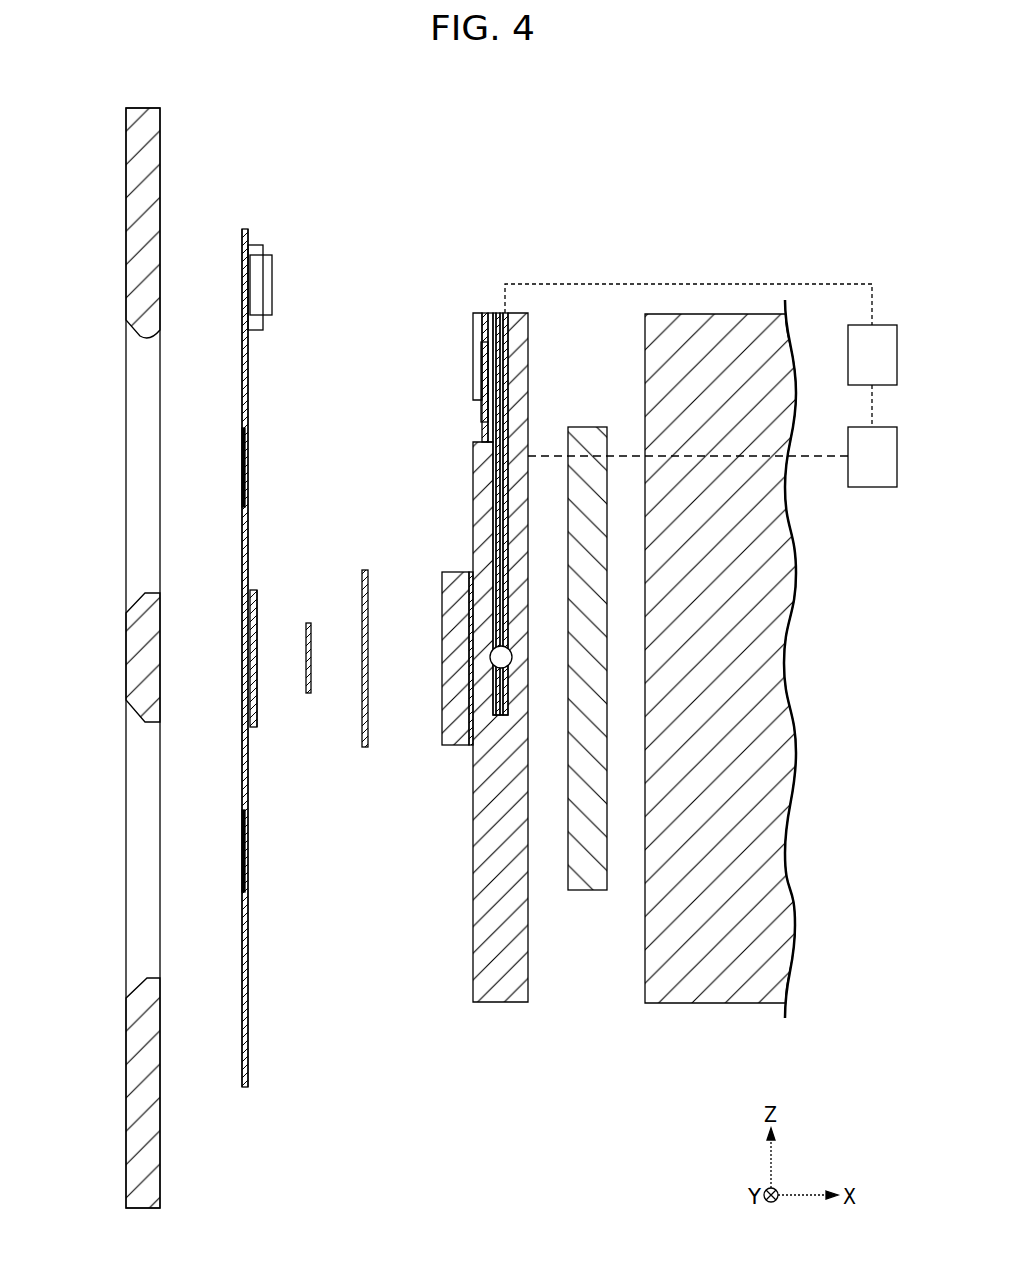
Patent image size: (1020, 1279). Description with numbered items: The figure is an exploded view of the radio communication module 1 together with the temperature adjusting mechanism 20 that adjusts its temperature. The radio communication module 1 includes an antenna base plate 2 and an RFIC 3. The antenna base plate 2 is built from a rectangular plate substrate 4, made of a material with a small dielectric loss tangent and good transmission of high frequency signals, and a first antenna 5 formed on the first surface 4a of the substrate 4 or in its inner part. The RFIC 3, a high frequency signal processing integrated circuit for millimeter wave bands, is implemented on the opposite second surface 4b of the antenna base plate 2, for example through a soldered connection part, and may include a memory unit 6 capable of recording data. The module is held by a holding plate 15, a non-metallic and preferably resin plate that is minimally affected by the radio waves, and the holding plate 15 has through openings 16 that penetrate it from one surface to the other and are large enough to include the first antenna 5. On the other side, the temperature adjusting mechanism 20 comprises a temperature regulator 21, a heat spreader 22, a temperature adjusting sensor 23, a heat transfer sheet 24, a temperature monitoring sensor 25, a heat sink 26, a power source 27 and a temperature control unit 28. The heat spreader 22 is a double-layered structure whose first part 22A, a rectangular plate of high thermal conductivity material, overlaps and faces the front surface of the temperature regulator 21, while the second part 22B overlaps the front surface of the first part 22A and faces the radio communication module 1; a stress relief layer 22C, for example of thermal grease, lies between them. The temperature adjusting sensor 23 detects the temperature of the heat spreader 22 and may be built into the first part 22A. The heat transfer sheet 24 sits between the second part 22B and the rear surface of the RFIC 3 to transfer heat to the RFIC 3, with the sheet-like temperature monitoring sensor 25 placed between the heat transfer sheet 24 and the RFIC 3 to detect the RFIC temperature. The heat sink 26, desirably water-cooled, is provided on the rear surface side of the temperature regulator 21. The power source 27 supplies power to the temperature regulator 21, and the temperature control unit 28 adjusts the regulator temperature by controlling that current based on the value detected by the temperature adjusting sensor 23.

The radio communication module 1 is at (250, 602).
The antenna base plate 2 is at (250, 658).
The RFIC 3 is at (280, 633).
The substrate 4 is at (250, 413).
The first surface 4a is at (242, 376).
The second surface 4b is at (250, 513).
The first antenna 5 is at (242, 460).
The memory unit 6 is at (257, 618).
The holding plate 15 is at (130, 118).
The through openings 16 is at (150, 340).
The temperature adjusting mechanism 20 is at (714, 266).
The temperature regulator 21 is at (587, 892).
The heat spreader 22 is at (402, 657).
The first part 22A is at (480, 800).
The second part 22B is at (448, 746).
The stress relief layer 22C is at (470, 748).
The temperature adjusting sensor 23 is at (508, 350).
The heat transfer sheet 24 is at (365, 748).
The temperature monitoring sensor 25 is at (308, 695).
The heat sink 26 is at (780, 670).
The power source 27 is at (874, 487).
The temperature control unit 28 is at (880, 325).